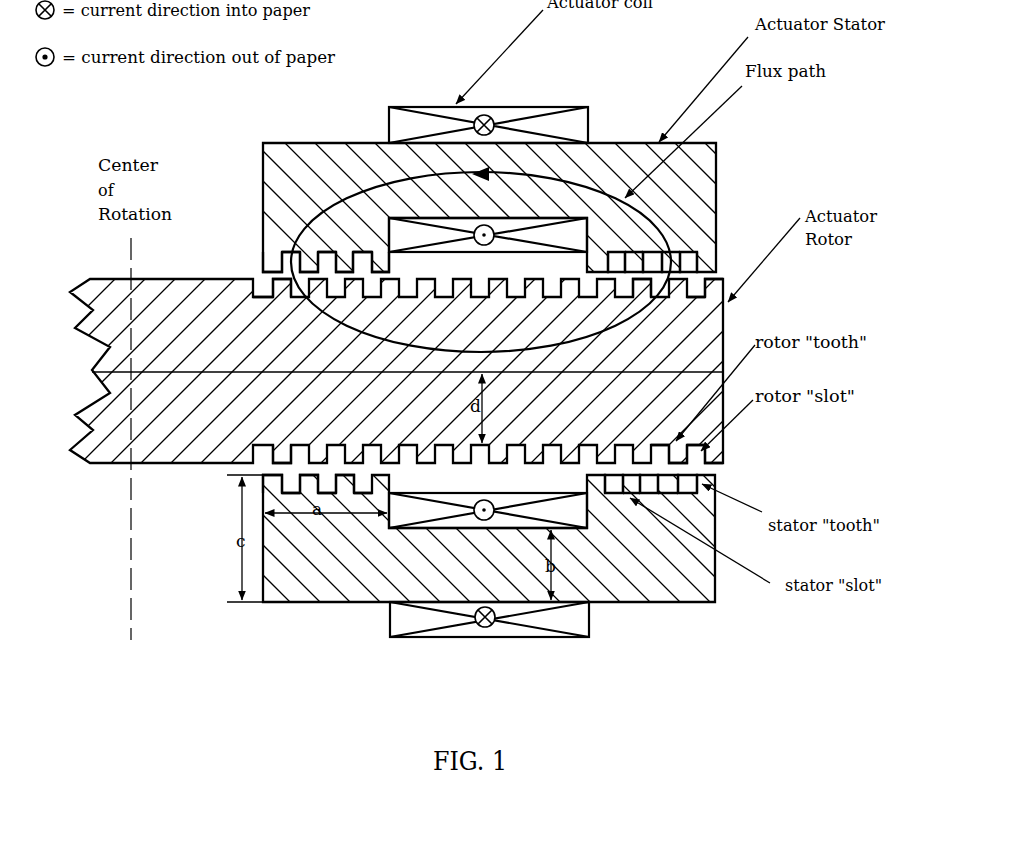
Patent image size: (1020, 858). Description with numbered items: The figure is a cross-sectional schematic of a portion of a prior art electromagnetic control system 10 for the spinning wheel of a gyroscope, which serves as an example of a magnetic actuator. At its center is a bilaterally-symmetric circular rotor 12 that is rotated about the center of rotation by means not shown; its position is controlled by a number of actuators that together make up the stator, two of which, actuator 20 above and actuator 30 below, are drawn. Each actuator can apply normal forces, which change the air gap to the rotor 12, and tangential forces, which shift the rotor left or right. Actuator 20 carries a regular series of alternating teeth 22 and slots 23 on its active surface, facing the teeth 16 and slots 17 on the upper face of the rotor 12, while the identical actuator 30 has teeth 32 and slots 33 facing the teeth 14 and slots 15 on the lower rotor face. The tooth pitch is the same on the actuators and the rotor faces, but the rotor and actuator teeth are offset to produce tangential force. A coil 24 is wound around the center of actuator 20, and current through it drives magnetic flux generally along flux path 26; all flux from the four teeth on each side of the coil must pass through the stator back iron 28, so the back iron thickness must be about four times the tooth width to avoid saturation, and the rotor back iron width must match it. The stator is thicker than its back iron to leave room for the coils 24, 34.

The system 10 is at (249, 639).
The rotor 12 is at (712, 330).
The teeth 14 is at (283, 452).
The slots 15 is at (700, 466).
The teeth 16 is at (278, 286).
The slots 17 is at (260, 297).
The actuator 20 is at (703, 163).
The teeth 22 is at (308, 262).
The slots 23 is at (325, 266).
The coil 24 is at (481, 106).
The flux path 26 is at (377, 263).
The stator back iron 28 is at (535, 168).
The actuator 30 is at (697, 590).
The teeth 32 is at (302, 481).
The slots 33 is at (362, 480).
The coil 34 is at (495, 632).